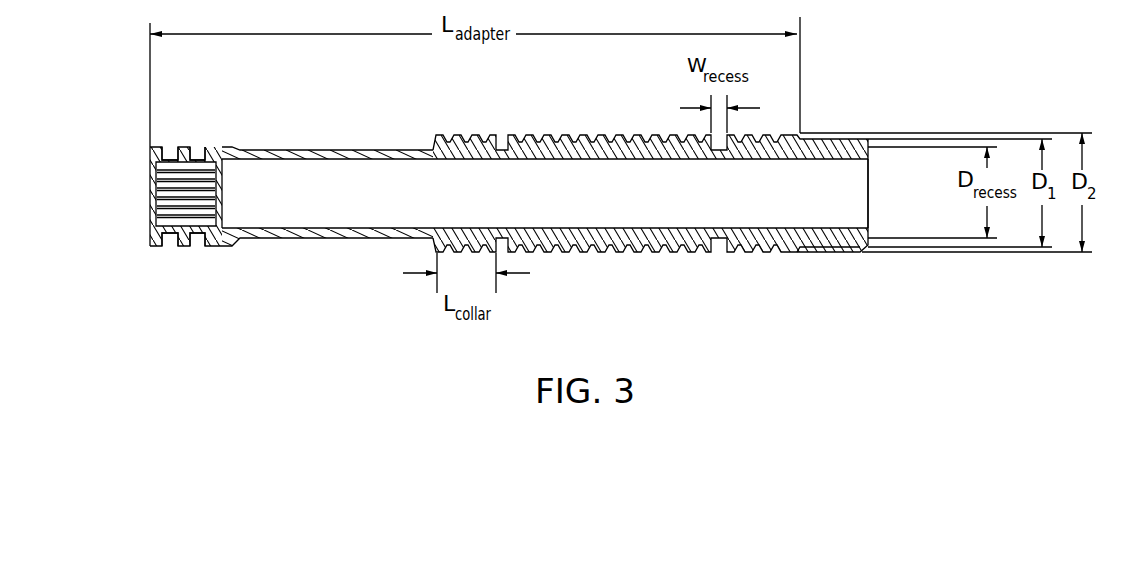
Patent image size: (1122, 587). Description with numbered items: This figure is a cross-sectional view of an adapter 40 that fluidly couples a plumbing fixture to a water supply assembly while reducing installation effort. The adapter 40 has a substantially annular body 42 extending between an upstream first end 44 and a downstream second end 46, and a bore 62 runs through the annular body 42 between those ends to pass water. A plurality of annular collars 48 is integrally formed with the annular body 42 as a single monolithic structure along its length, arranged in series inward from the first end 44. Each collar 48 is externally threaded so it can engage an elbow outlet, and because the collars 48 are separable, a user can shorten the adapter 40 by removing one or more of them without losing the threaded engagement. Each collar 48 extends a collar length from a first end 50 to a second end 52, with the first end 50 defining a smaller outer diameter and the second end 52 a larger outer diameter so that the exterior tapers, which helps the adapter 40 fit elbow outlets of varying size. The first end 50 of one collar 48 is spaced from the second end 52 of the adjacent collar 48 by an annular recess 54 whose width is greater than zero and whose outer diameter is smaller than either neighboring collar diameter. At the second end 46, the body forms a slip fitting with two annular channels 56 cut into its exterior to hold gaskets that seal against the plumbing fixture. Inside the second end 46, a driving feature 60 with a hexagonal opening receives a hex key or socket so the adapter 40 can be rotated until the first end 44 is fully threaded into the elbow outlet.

The adapter 40 is at (507, 181).
The annular body 42 is at (340, 150).
The first end 44 is at (876, 190).
The second end 46 is at (146, 184).
The annular collars 48 is at (745, 255).
The first end of collar 50 is at (861, 258).
The second end of collar 52 is at (801, 262).
The annular recess 54 is at (648, 134).
The annular channels 56 is at (198, 145).
The driving feature 60 is at (162, 197).
The bore 62 is at (529, 206).